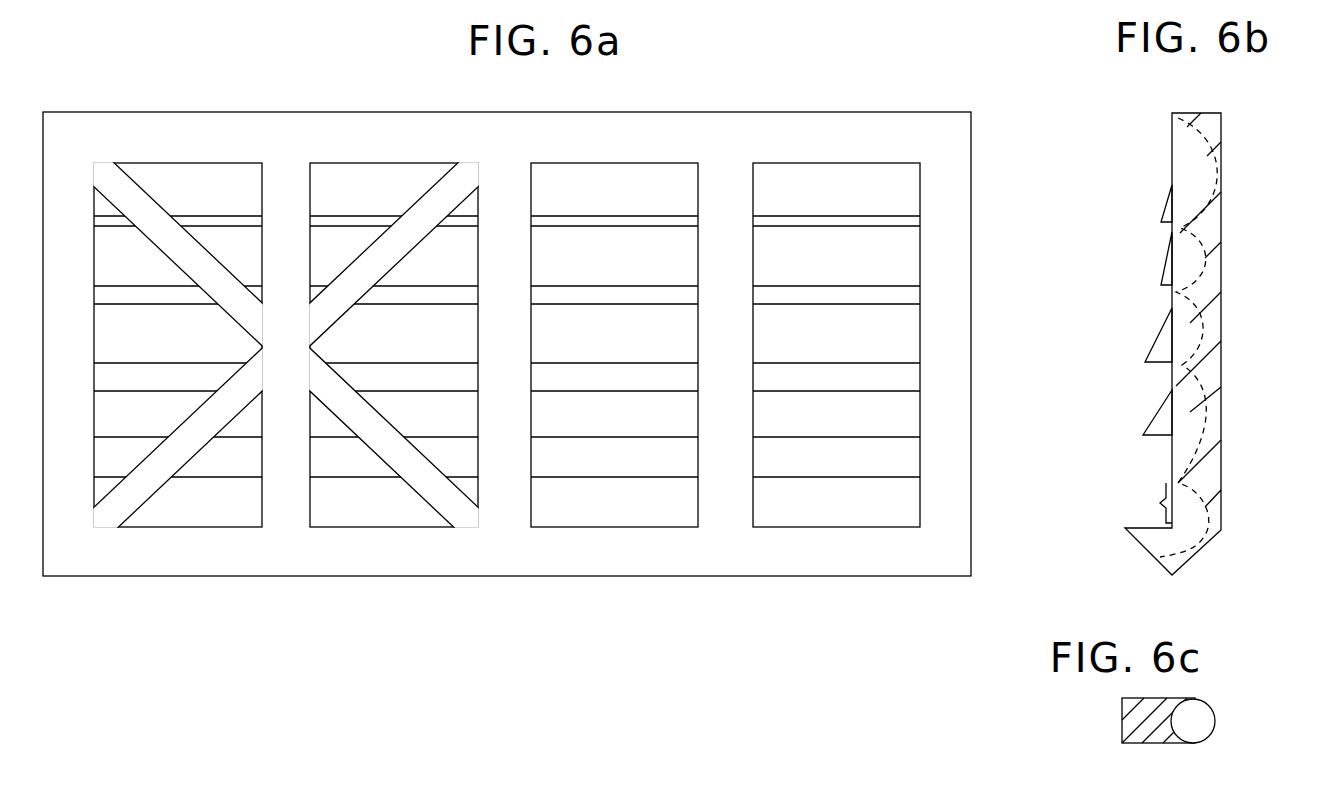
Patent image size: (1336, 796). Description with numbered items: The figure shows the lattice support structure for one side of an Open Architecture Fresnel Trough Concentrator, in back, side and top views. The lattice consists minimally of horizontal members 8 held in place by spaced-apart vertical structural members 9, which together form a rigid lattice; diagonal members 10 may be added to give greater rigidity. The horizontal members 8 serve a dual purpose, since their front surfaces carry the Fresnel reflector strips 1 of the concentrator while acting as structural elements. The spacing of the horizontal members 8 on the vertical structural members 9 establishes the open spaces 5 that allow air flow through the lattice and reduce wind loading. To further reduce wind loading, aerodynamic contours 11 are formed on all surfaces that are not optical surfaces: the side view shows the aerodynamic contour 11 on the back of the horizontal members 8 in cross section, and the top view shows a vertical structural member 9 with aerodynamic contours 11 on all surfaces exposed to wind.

In FIG. 6b, the Fresnel reflector strips 1 is at (1148, 523).
In FIG. 6a, the open spaces 5 is at (823, 450).
In FIG. 6a, the horizontal members 8 is at (891, 188).
In FIG. 6b, the horizontal members 8 is at (1188, 158).
In FIG. 6a, the vertical structural members 9 is at (730, 503).
In FIG. 6c, the vertical structural members 9 is at (1137, 733).
In FIG. 6a, the diagonal members 10 is at (185, 442).
In FIG. 6b, the aerodynamic contours 11 is at (1190, 355).
In FIG. 6c, the aerodynamic contours 11 is at (1217, 710).